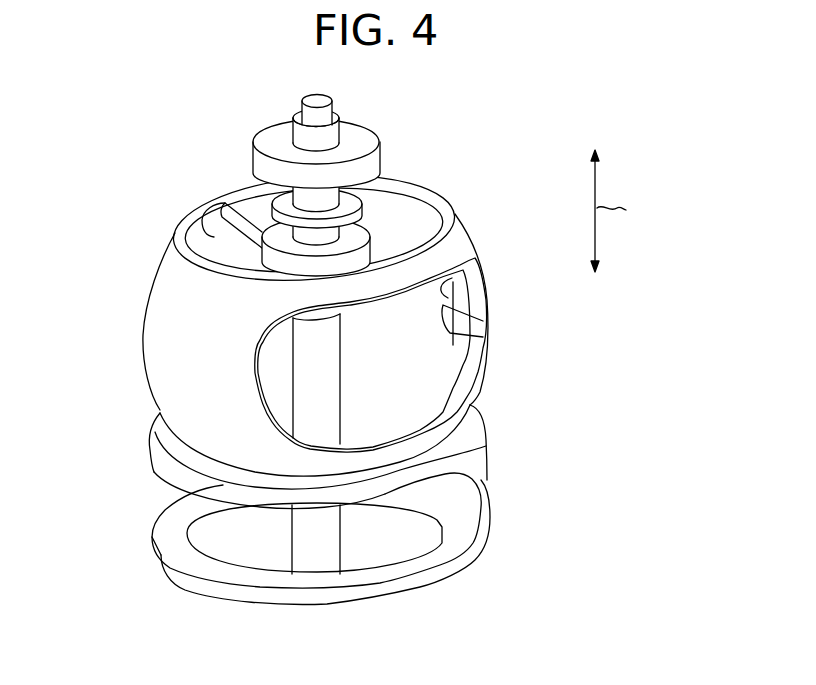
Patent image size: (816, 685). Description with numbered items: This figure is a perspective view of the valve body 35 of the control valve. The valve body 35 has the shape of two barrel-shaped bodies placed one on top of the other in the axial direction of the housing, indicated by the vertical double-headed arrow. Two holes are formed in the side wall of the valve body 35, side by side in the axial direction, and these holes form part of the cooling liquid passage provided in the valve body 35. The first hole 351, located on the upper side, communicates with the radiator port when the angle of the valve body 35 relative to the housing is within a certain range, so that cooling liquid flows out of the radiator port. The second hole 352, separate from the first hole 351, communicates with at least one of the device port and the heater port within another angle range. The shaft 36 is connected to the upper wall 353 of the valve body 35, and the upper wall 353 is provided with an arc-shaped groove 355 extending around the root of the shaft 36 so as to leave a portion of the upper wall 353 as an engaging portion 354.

The valve body 35 is at (503, 167).
The shaft 36 is at (336, 138).
The first hole 351 is at (477, 287).
The second hole 352 is at (425, 486).
The upper wall 353 is at (453, 213).
The engaging portion 354 is at (243, 193).
The arc-shaped groove 355 is at (207, 236).